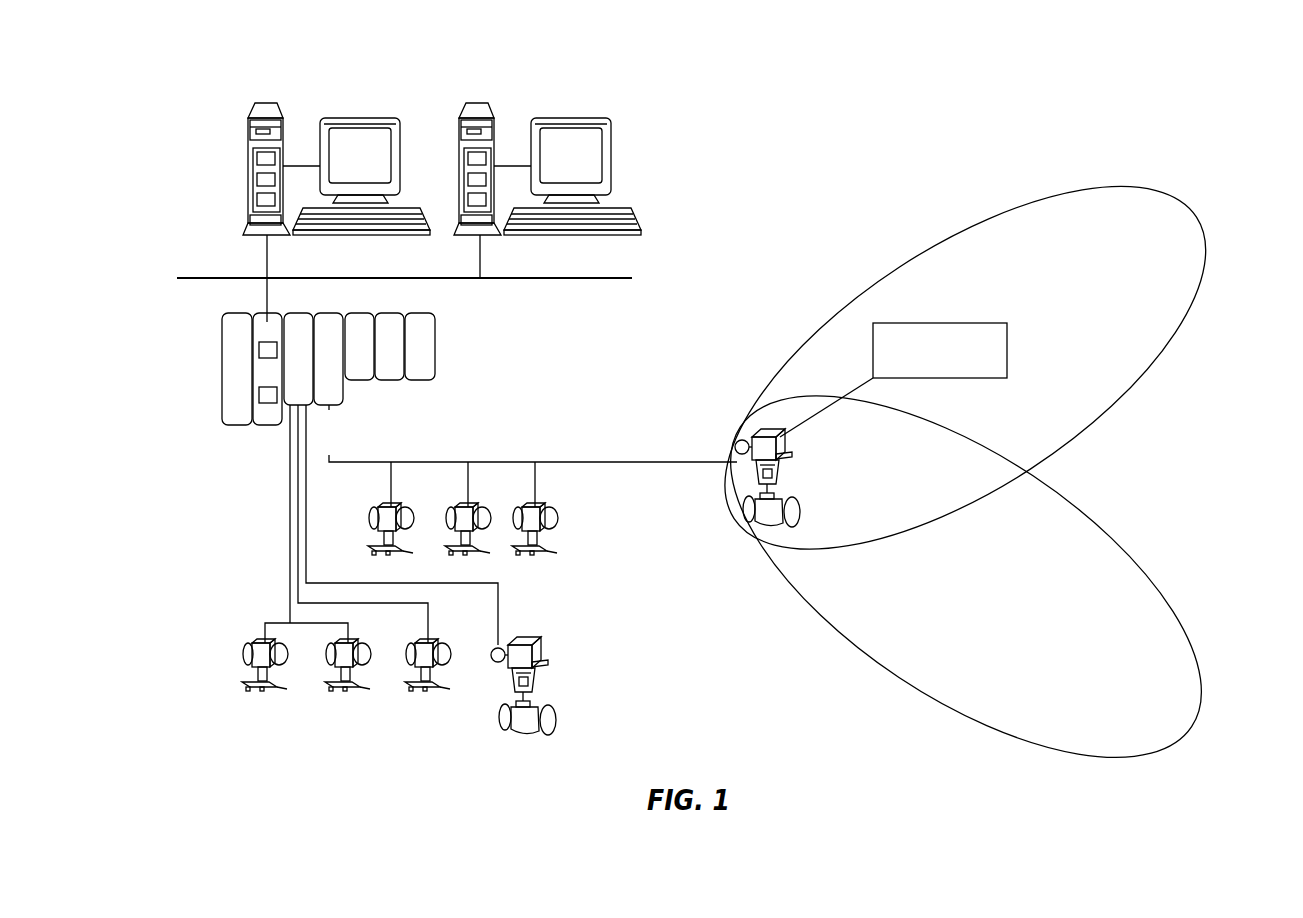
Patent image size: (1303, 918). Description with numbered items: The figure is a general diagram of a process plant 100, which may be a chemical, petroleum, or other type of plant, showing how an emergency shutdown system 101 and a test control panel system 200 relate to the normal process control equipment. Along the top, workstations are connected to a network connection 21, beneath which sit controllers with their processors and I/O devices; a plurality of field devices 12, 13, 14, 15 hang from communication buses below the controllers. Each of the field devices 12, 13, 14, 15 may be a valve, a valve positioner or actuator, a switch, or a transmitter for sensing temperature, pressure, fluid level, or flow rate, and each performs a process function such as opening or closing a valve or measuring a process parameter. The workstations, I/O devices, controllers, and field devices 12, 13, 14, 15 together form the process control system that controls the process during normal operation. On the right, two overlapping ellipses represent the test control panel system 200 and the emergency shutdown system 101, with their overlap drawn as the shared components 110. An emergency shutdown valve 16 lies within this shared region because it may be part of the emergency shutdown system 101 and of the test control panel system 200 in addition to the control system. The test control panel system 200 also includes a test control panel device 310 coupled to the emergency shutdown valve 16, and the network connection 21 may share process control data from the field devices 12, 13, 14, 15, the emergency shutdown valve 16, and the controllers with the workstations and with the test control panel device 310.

The process plant 100 is at (388, 49).
The network connection 21 is at (555, 280).
The field device 12 is at (253, 673).
The field device 13 is at (333, 676).
The field device 14 is at (413, 675).
The field device 15 is at (517, 673).
The emergency shutdown valve 16 is at (793, 500).
The test control panel system 200 is at (1168, 192).
The test control panel device 310 is at (948, 323).
The shared components 110 is at (962, 433).
The emergency shutdown system 101 is at (1170, 597).